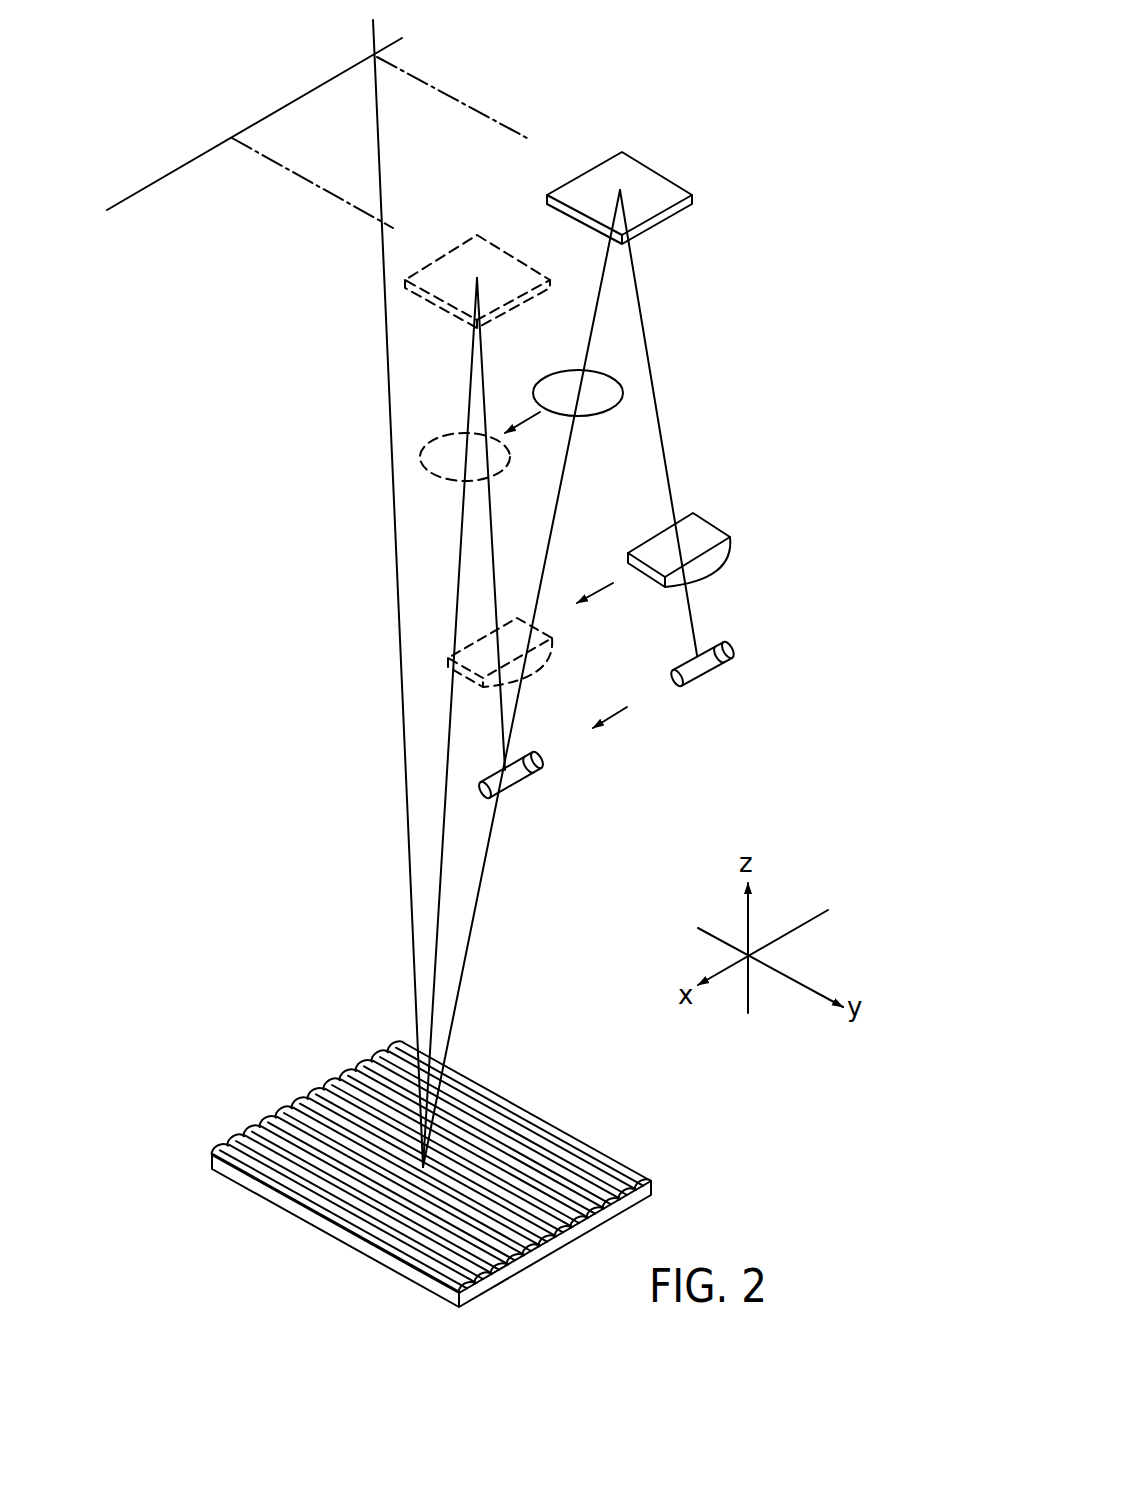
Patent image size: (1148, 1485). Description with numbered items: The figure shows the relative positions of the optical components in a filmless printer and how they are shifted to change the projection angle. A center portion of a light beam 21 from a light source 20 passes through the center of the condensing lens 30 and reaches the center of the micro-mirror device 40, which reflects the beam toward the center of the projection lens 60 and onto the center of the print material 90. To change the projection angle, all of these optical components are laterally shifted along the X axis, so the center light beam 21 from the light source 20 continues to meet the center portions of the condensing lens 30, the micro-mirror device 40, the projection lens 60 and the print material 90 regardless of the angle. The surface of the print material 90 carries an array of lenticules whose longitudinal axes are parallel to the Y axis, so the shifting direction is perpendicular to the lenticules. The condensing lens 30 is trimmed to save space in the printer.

The light source 20 is at (712, 664).
The light beam 21 is at (695, 620).
The condensing lens 30 is at (710, 527).
The micro-mirror device 40 is at (608, 166).
The projection lens 60 is at (568, 375).
The print material 90 is at (602, 1158).